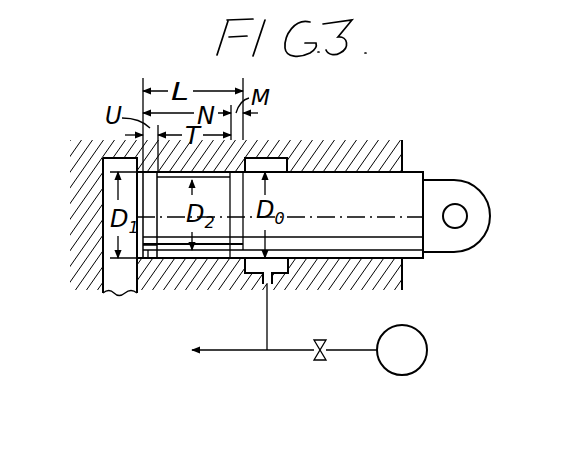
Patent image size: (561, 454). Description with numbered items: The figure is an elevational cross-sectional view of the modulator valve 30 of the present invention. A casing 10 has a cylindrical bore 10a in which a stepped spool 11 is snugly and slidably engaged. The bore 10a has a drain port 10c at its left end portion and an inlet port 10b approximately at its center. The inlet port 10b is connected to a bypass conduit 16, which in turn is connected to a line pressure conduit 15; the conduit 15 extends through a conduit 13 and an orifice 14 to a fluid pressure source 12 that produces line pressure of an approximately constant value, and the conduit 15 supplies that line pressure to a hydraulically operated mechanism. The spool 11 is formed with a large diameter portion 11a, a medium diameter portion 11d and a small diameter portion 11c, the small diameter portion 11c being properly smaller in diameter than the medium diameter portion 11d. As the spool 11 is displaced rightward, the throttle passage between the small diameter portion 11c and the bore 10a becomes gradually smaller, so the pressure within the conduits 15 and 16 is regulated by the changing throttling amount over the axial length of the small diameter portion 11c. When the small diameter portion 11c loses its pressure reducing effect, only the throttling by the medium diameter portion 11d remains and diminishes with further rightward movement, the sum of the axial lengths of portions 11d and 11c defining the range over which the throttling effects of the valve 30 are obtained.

The casing 10 is at (362, 155).
The cylindrical bore 10a is at (173, 261).
The inlet port 10b is at (276, 284).
The drain port 10c is at (112, 274).
The stepped spool 11 is at (394, 180).
The large diameter portion 11a is at (280, 170).
The small diameter portion 11c is at (204, 262).
The medium diameter portion 11d is at (148, 259).
The fluid pressure source 12 is at (414, 371).
The conduit 13 is at (346, 352).
The orifice 14 is at (318, 360).
The line pressure conduit 15 is at (286, 350).
The bypass conduit 16 is at (266, 310).
The modulator valve 30 is at (386, 128).